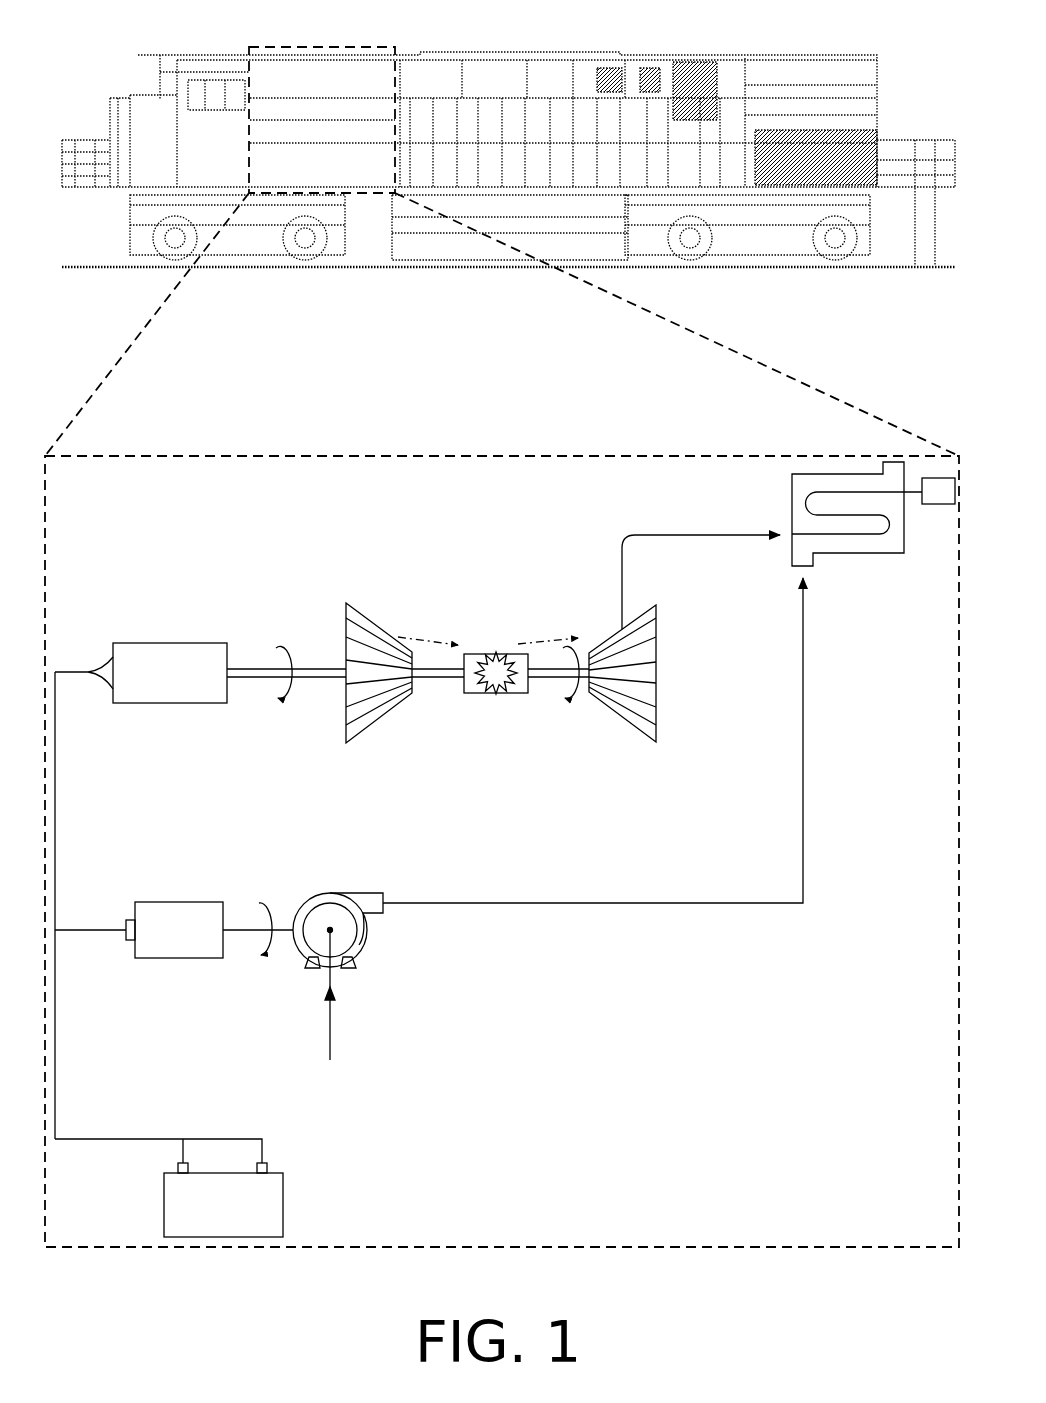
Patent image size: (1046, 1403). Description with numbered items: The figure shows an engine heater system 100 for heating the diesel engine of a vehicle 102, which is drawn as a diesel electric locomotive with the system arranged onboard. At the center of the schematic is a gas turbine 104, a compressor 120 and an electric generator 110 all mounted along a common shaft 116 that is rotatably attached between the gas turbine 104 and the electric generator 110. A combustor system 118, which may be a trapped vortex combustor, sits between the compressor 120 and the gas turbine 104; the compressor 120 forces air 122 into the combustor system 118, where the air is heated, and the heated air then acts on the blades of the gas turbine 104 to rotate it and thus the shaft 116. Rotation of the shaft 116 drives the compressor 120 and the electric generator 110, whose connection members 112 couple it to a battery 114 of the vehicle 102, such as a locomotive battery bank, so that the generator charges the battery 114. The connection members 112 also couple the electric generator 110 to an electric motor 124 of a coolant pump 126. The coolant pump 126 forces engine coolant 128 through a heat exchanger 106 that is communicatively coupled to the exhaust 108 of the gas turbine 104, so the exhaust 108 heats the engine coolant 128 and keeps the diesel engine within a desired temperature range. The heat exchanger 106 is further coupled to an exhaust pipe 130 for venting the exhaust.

The engine heater system 100 is at (400, 456).
The vehicle 102 is at (115, 34).
The gas turbine 104 is at (661, 597).
The heat exchanger 106 is at (786, 494).
The exhaust 108 is at (632, 543).
The electric generator 110 is at (160, 638).
The connection members 112 is at (97, 710).
The battery 114 is at (160, 1195).
The shaft 116 is at (333, 665).
The combustor system 118 is at (492, 650).
The compressor 120 is at (342, 603).
The air 122 is at (418, 630).
The electric motor 124 is at (170, 898).
The coolant pump 126 is at (302, 896).
The engine coolant 128 is at (487, 903).
The exhaust pipe 130 is at (941, 504).